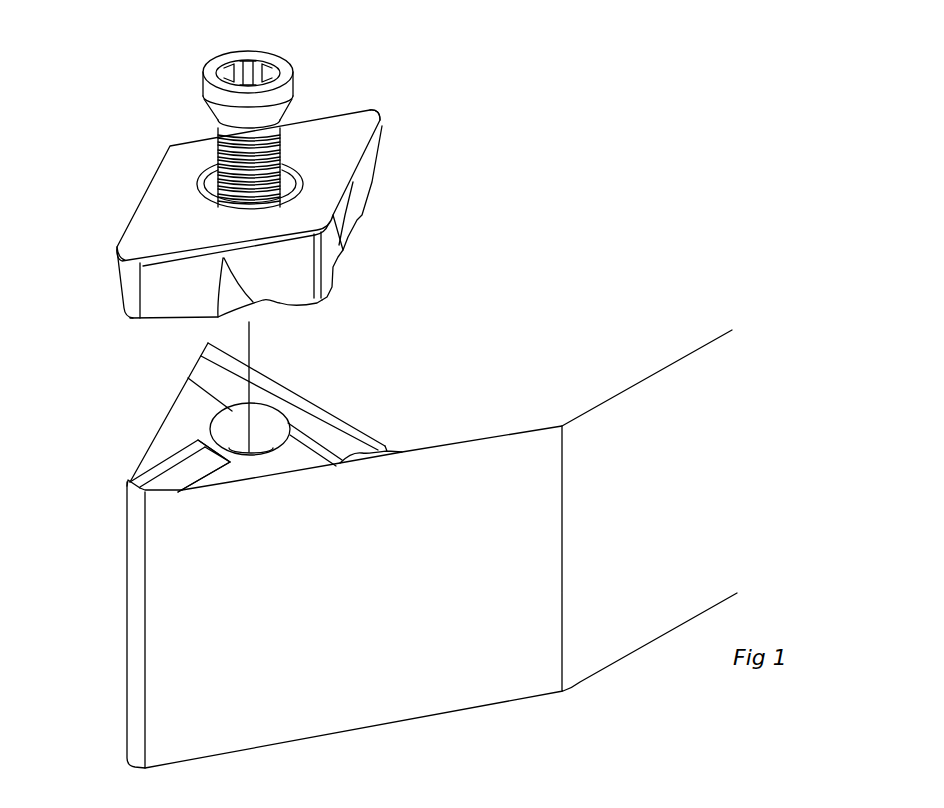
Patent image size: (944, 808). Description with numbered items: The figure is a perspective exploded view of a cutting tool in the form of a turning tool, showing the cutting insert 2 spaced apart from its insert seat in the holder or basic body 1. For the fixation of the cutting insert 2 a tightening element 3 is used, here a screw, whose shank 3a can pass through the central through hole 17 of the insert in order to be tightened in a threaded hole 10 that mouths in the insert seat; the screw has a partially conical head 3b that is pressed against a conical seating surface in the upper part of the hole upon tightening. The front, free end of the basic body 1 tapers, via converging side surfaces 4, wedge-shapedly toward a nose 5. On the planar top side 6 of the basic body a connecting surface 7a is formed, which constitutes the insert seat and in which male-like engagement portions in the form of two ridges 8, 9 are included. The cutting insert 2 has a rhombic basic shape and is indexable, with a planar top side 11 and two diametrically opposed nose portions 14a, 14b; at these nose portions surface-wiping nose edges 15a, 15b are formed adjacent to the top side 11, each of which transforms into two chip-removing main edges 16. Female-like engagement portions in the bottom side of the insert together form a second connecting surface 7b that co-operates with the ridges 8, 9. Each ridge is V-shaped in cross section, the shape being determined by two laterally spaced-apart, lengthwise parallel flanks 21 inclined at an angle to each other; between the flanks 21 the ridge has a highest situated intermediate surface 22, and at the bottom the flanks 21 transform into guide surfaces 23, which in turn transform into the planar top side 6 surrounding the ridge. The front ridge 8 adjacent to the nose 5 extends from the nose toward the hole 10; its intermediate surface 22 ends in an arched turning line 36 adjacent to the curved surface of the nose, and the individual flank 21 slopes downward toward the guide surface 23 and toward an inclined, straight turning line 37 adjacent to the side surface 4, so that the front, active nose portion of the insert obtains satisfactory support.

The basic body 1 is at (633, 707).
The cutting insert 2 is at (348, 60).
The tightening element 3 is at (168, 72).
The shank 3a is at (252, 188).
The head 3b is at (292, 98).
The side surfaces 4 is at (349, 601).
The nose 5 is at (128, 613).
The top side 6 is at (498, 315).
The connecting surface 7a is at (405, 396).
The second connecting surface 7b is at (372, 266).
The ridge 8 is at (203, 474).
The ridge 9 is at (320, 415).
The threaded hole 10 is at (268, 415).
The top side 11 is at (346, 160).
The nose portion 14a is at (125, 287).
The nose portion 14b is at (378, 187).
The nose edge 15a is at (117, 247).
The nose edge 15b is at (380, 117).
The main edges 16 is at (150, 185).
The through hole 17 is at (213, 187).
The flank surfaces 21 is at (323, 440).
The intermediate surface 22 is at (163, 465).
The guide surfaces 23 is at (216, 472).
The arched turning line 36 is at (128, 482).
The inclined, straight turning line 37 is at (147, 501).